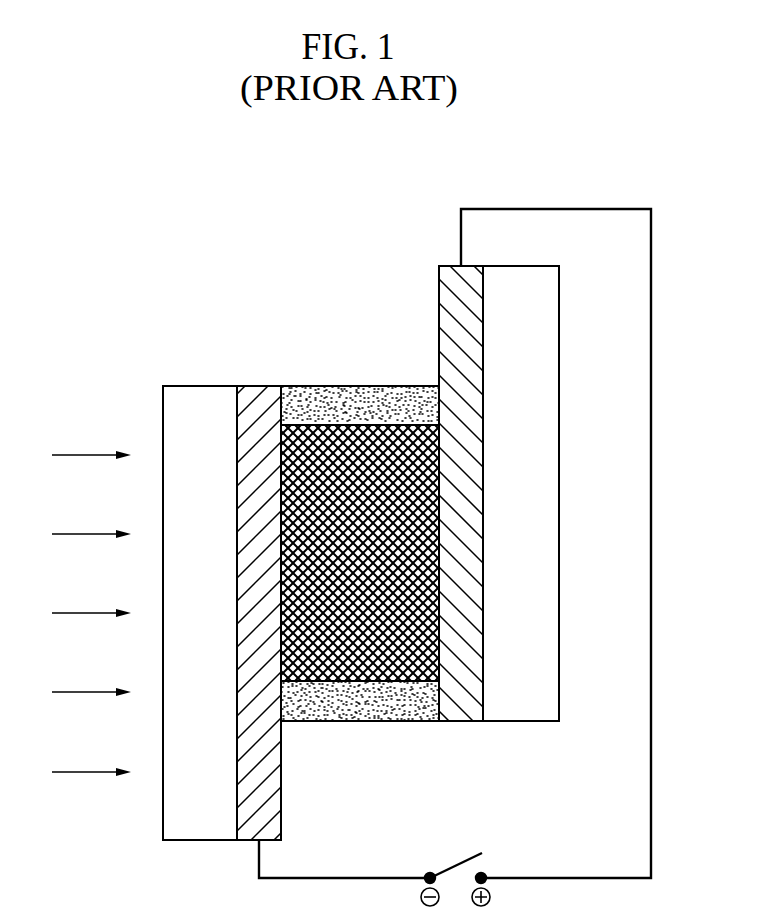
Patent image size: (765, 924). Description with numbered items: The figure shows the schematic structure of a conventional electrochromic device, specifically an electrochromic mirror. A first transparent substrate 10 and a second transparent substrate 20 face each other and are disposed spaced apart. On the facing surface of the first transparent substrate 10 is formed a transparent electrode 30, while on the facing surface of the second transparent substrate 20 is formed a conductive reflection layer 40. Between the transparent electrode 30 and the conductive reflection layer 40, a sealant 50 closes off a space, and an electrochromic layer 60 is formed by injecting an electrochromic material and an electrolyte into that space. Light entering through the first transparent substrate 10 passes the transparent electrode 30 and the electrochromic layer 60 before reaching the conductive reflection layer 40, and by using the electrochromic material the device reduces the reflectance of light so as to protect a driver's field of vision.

The first transparent substrate 10 is at (205, 403).
The second transparent substrate 20 is at (525, 276).
The transparent electrode 30 is at (268, 388).
The conductive reflection layer 40 is at (450, 276).
The sealant 50 is at (367, 403).
The electrochromic layer 60 is at (362, 683).